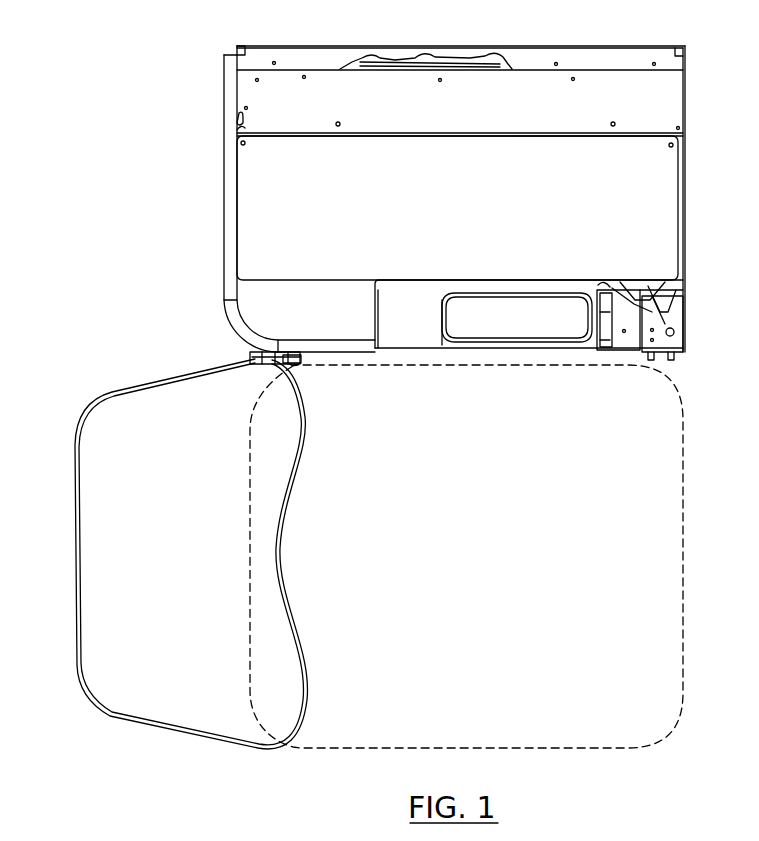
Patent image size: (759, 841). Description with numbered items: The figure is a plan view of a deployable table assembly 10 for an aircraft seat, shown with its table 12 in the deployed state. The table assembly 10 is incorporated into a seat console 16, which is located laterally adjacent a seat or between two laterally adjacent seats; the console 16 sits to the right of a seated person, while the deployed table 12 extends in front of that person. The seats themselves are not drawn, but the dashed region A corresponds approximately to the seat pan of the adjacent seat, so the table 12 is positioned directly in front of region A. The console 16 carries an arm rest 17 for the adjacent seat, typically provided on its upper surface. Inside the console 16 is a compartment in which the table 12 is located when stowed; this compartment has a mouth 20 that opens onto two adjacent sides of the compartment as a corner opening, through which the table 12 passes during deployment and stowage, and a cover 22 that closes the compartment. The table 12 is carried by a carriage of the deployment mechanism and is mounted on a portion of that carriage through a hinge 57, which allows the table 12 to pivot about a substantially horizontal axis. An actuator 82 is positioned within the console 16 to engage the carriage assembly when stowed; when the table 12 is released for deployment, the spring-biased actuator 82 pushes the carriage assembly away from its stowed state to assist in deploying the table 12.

The deployable table assembly 10 is at (117, 258).
The table 12 is at (184, 560).
The seat console 16 is at (690, 94).
The arm rest 17 is at (509, 335).
The mouth 20 is at (222, 262).
The cover 22 is at (481, 205).
The hinge 57 is at (296, 360).
The actuator 82 is at (642, 290).
The region A is at (494, 548).